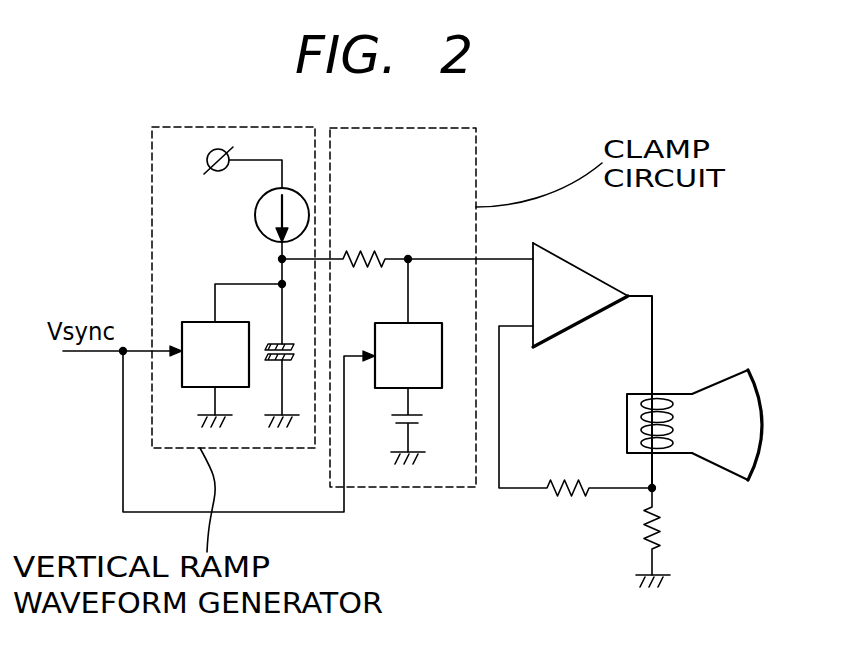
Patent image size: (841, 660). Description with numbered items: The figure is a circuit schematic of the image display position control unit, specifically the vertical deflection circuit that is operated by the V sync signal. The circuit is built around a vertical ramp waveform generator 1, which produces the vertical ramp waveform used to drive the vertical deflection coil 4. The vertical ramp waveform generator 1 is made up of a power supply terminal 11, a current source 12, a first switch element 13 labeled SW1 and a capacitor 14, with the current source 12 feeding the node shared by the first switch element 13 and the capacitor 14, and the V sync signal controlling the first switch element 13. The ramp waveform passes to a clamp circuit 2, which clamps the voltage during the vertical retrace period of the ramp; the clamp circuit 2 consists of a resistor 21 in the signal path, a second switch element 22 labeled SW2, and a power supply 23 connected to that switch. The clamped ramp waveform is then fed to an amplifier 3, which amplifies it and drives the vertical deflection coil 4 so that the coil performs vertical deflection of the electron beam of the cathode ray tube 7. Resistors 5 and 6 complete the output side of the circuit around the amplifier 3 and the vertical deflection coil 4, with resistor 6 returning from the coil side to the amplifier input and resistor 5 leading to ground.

The vertical ramp waveform generator 1 is at (152, 150).
The clamp circuit 2 is at (476, 160).
The amplifier 3 is at (587, 271).
The vertical deflection coil 4 is at (640, 415).
The resistor 5 is at (663, 520).
The resistor 6 is at (560, 496).
The cathode ray tube 7 is at (754, 378).
The power supply terminal 11 is at (218, 172).
The current source 12 is at (257, 224).
The first switch element 13 is at (192, 322).
The capacitor 14 is at (274, 344).
The resistor 21 is at (377, 259).
The second switch element 22 is at (425, 323).
The power supply 23 is at (418, 415).